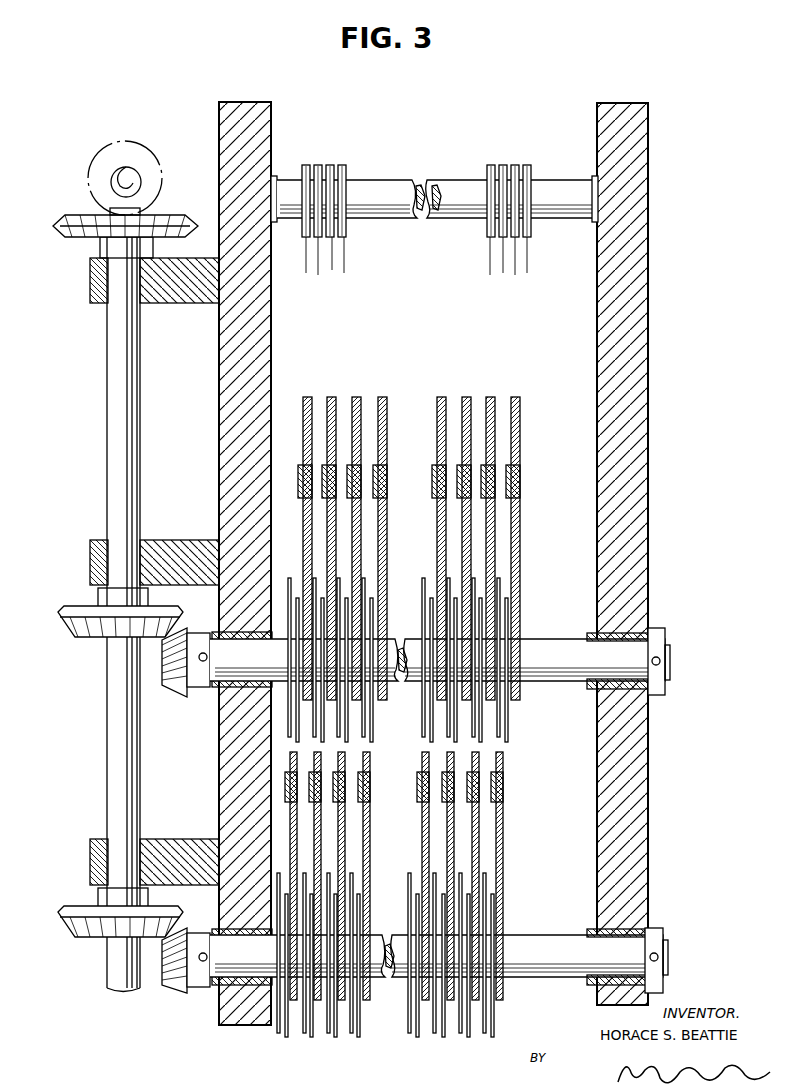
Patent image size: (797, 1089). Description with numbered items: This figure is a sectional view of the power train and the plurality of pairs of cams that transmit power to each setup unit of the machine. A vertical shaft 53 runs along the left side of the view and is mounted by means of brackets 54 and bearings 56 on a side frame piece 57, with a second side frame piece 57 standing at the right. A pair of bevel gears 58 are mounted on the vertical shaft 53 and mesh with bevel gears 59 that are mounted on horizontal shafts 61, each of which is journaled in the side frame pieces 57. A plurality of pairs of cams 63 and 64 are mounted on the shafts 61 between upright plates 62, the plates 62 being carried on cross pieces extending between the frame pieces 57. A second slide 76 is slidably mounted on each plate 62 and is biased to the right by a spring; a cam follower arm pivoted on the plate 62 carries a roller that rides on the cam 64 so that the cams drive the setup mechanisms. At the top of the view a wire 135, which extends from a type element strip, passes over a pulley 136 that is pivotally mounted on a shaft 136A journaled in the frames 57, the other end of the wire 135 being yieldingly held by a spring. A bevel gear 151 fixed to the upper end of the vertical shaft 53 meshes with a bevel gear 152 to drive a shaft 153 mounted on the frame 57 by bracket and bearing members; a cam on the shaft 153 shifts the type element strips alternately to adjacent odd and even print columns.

The vertical shaft 53 is at (110, 400).
The bracket 54 is at (185, 303).
The bearing 56 is at (100, 305).
The side frame piece 57 is at (219, 360).
The bevel gear 58 is at (78, 637).
The bevel gear 59 is at (180, 698).
The shaft 61 is at (556, 645).
The plate 62 is at (515, 397).
The cam 63 is at (420, 578).
The cam 64 is at (505, 598).
The second slide 76 is at (485, 465).
The wire 135 is at (500, 262).
The pulley 136 is at (487, 170).
The shaft 136A is at (470, 210).
The bevel gear 151 is at (178, 213).
The bevel gear 152 is at (150, 172).
The shaft 153 is at (112, 180).